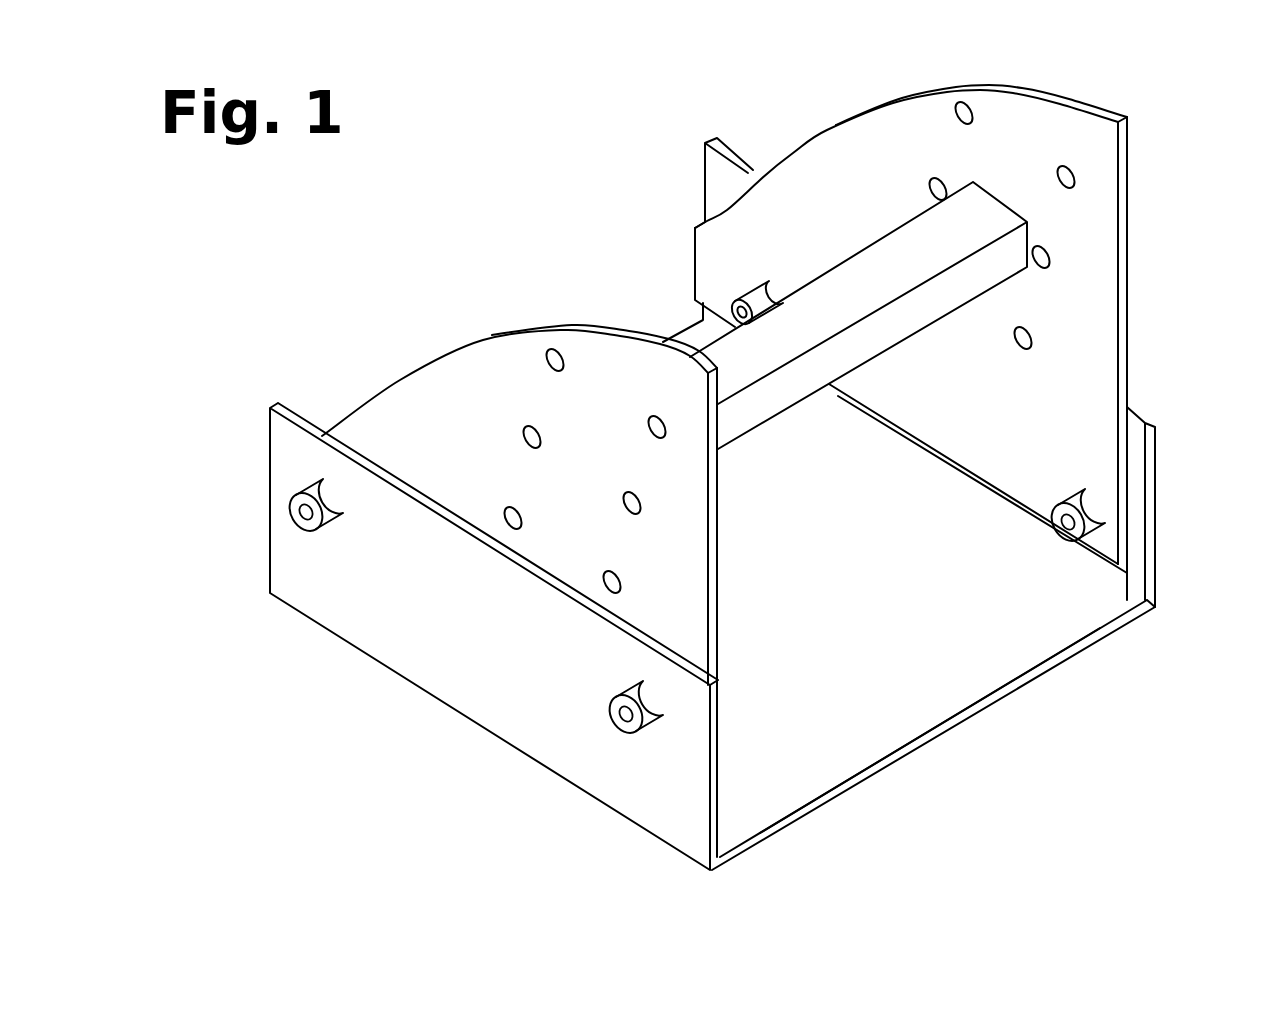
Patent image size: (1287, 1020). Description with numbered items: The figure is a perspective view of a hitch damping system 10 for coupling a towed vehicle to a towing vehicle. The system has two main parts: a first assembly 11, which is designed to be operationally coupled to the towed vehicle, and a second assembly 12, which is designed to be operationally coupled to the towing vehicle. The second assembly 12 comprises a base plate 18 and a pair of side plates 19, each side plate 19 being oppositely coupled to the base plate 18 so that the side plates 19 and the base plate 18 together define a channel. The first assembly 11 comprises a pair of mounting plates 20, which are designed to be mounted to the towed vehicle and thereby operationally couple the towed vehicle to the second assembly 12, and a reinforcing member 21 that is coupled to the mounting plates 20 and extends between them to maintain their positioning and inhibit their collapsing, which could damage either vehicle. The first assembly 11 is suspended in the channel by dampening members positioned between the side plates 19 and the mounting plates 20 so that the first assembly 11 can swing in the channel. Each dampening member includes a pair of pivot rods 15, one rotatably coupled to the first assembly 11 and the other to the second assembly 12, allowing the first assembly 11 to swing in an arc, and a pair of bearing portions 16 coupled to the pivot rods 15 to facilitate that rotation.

The hitch damping system 10 is at (567, 207).
The first assembly 11 is at (1163, 186).
The second assembly 12 is at (970, 781).
The pivot rods 15 is at (305, 513).
The bearing portions 16 is at (325, 510).
The base plate 18 is at (1078, 650).
The side plates 19 is at (430, 610).
The mounting plates 20 is at (435, 412).
The reinforcing member 21 is at (818, 300).